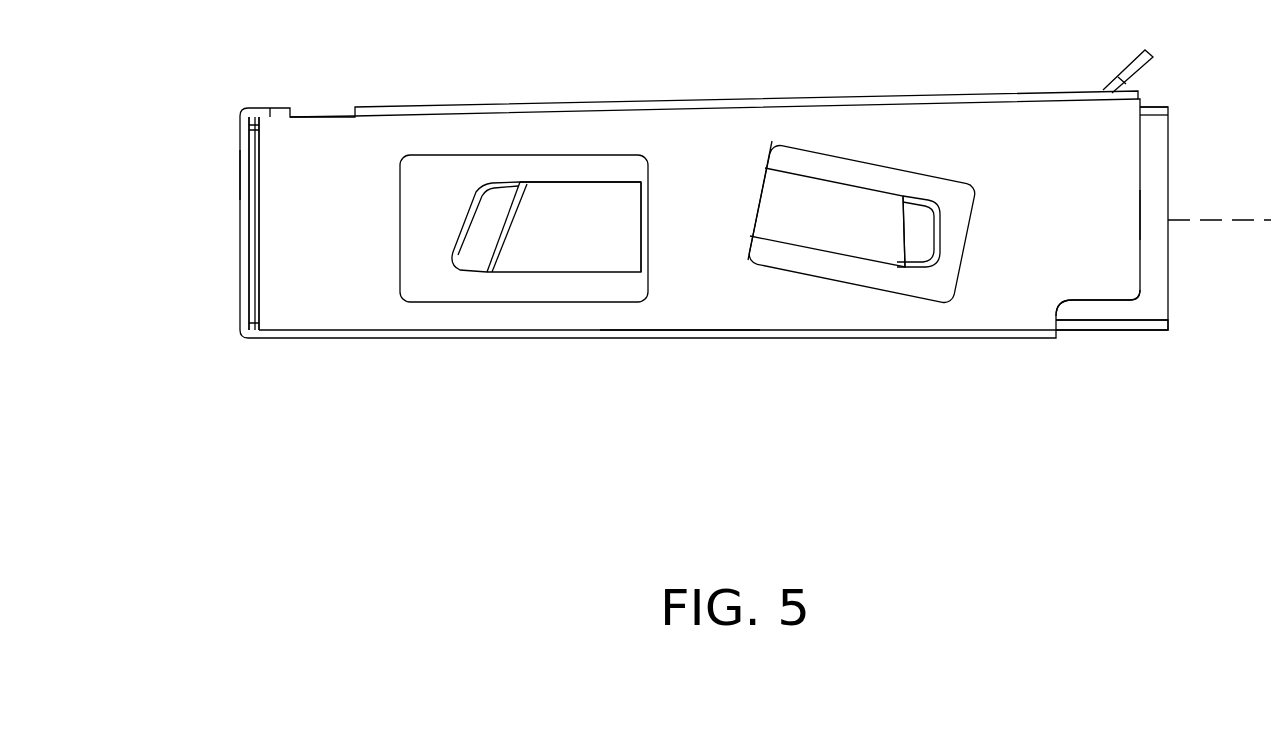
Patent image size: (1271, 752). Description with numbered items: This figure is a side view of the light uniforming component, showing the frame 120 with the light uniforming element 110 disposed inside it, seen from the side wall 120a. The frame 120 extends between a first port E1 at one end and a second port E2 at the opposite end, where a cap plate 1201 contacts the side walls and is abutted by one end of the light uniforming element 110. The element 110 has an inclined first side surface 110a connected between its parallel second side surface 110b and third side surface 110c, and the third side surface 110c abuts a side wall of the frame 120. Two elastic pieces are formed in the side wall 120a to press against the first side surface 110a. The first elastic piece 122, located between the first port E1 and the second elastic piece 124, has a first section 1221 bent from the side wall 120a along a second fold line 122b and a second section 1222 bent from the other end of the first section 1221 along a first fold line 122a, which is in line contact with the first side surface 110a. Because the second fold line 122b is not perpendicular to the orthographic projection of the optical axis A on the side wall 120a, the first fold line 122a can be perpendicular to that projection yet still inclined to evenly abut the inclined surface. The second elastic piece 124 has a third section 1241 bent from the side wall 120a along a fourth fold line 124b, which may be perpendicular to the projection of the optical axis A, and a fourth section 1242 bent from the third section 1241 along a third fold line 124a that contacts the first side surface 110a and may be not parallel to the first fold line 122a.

The light uniforming element 110 is at (1160, 138).
The first side surface 110a is at (945, 283).
The second side surface 110b is at (1150, 103).
The third side surface 110c is at (1128, 328).
The frame 120 is at (745, 378).
The side wall 120a is at (683, 310).
The cap plate 1201 is at (248, 255).
The first elastic piece 122 is at (942, 418).
The first section 1221 is at (835, 248).
The second section 1222 is at (925, 265).
The first fold line 122a is at (906, 214).
The second fold line 122b is at (752, 190).
The second elastic piece 124 is at (573, 397).
The third section 1241 is at (528, 252).
The fourth section 1242 is at (467, 258).
The third fold line 124a is at (520, 235).
The fourth fold line 124b is at (646, 213).
The first port E1 is at (1150, 215).
The second port E2 is at (215, 190).
The optical axis A is at (1246, 220).